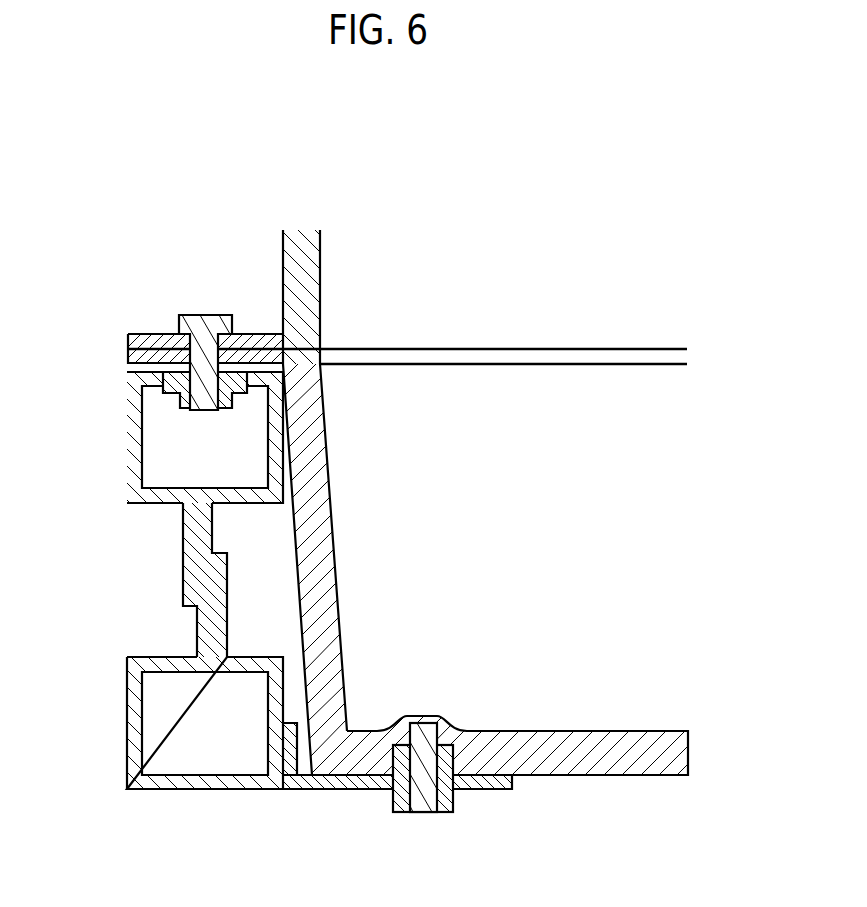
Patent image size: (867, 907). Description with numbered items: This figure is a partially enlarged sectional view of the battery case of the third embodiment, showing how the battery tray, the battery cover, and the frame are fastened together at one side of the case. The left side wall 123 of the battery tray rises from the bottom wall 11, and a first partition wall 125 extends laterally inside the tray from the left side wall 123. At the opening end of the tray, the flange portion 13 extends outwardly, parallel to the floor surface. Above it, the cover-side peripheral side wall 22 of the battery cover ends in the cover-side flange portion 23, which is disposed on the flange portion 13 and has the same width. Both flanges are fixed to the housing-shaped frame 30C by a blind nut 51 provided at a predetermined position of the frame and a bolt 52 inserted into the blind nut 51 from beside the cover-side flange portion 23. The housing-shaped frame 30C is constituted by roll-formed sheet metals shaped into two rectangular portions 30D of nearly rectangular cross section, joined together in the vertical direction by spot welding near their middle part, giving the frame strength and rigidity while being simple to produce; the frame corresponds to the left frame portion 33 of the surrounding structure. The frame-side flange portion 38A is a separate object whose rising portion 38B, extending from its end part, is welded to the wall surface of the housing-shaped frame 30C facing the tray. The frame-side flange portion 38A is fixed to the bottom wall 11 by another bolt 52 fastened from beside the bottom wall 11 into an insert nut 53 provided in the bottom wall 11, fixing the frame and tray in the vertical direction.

The bottom wall 11 is at (632, 740).
The flange portion 13 is at (135, 352).
The cover-side peripheral side wall 22 is at (305, 282).
The cover-side flange portion 23 is at (150, 338).
The housing-shaped frame 30C is at (183, 577).
The rectangular portions 30D is at (133, 480).
The left frame portion 33 is at (135, 683).
The frame-side flange portions 38A is at (319, 777).
The rising portions 38B is at (290, 755).
The blind nuts 51 is at (175, 400).
The bolts 52 is at (198, 417).
The insert nuts 53 is at (478, 790).
The left side wall 123 is at (317, 467).
The first partition walls 125 is at (579, 390).